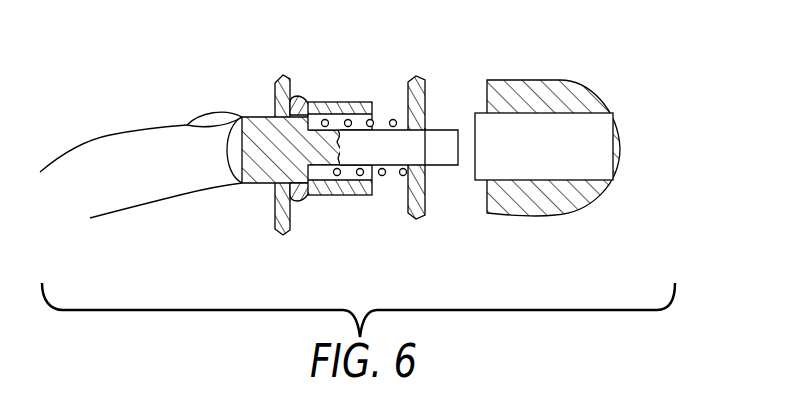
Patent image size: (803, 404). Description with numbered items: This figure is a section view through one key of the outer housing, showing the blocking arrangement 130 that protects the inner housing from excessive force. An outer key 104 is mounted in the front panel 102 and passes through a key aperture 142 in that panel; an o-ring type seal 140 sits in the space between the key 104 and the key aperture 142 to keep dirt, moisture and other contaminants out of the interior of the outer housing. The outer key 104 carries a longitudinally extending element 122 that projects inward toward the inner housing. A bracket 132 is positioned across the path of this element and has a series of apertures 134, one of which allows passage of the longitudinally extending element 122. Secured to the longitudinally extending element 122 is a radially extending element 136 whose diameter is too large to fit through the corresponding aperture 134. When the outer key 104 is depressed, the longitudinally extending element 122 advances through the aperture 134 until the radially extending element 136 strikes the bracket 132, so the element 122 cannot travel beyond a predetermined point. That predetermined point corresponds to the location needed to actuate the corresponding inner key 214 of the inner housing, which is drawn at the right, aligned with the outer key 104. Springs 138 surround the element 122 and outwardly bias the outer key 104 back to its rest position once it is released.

The blocking arrangement 130 is at (192, 65).
The front panel 102 is at (273, 228).
The outer key 104 is at (265, 183).
The key aperture 142 is at (276, 111).
The o-ring type seal 140 is at (301, 200).
The radially extending element 136 is at (328, 102).
The spring 138 is at (397, 109).
The bracket 132 is at (417, 82).
The longitudinally extending element 122 is at (430, 153).
The aperture 134 is at (428, 127).
The inner key 214 is at (597, 122).